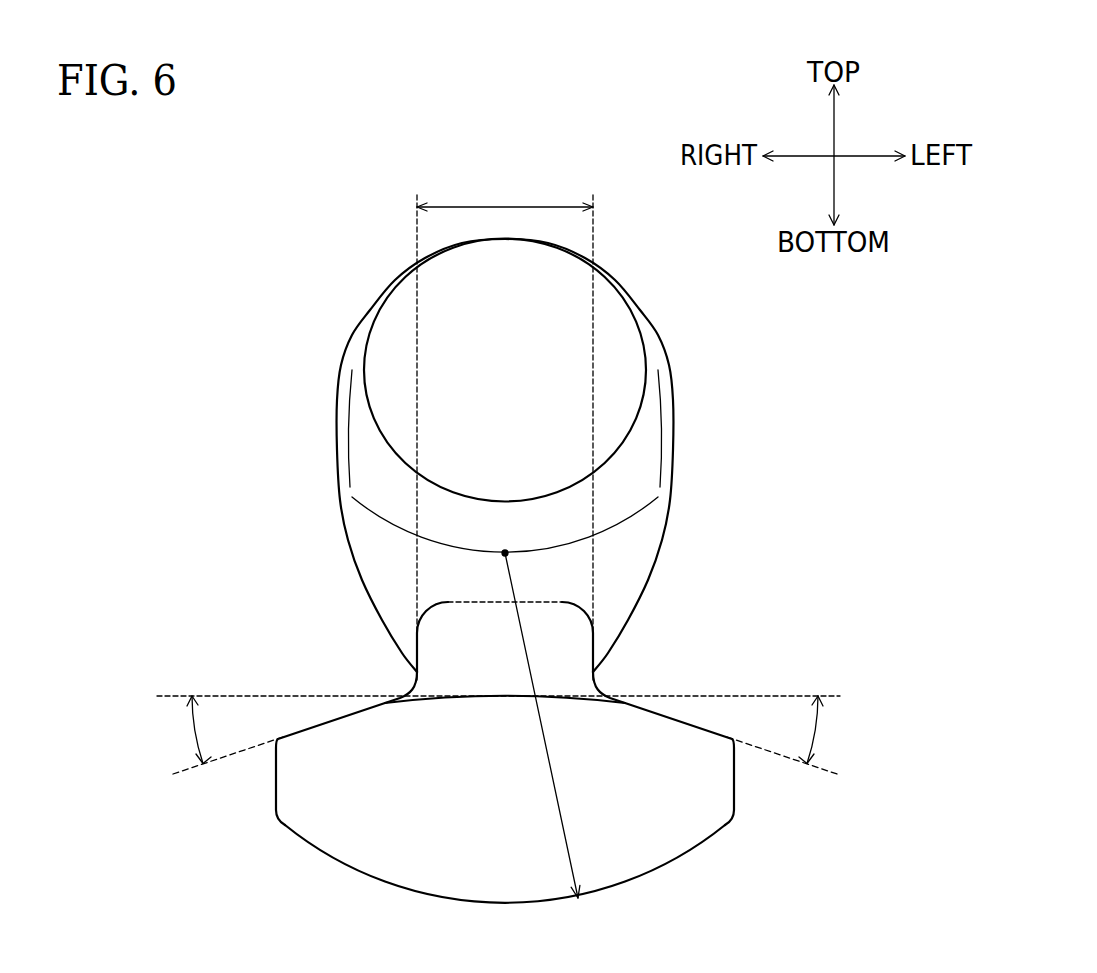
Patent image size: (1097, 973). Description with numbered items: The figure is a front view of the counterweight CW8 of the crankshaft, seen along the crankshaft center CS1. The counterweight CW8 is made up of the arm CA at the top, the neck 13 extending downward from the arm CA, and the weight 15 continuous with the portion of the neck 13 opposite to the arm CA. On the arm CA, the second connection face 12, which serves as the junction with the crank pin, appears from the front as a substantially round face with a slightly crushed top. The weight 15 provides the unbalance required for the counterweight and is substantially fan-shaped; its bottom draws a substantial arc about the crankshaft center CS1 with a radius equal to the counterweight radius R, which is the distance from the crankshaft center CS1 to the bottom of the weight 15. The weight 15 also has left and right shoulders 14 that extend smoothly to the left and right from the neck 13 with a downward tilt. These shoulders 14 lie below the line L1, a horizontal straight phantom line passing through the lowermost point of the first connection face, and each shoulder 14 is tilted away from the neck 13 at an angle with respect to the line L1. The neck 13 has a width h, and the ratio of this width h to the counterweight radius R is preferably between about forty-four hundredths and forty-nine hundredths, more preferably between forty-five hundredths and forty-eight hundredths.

The second connection face 12 is at (600, 310).
The neck 13 is at (568, 667).
The shoulders 14 is at (317, 727).
The weight 15 is at (637, 863).
The counterweight CW8 is at (357, 296).
The arm CA is at (640, 468).
The crankshaft center CS1 is at (508, 551).
The line L1 is at (753, 693).
The width of the neck h is at (505, 427).
The counterweight radius R is at (553, 776).